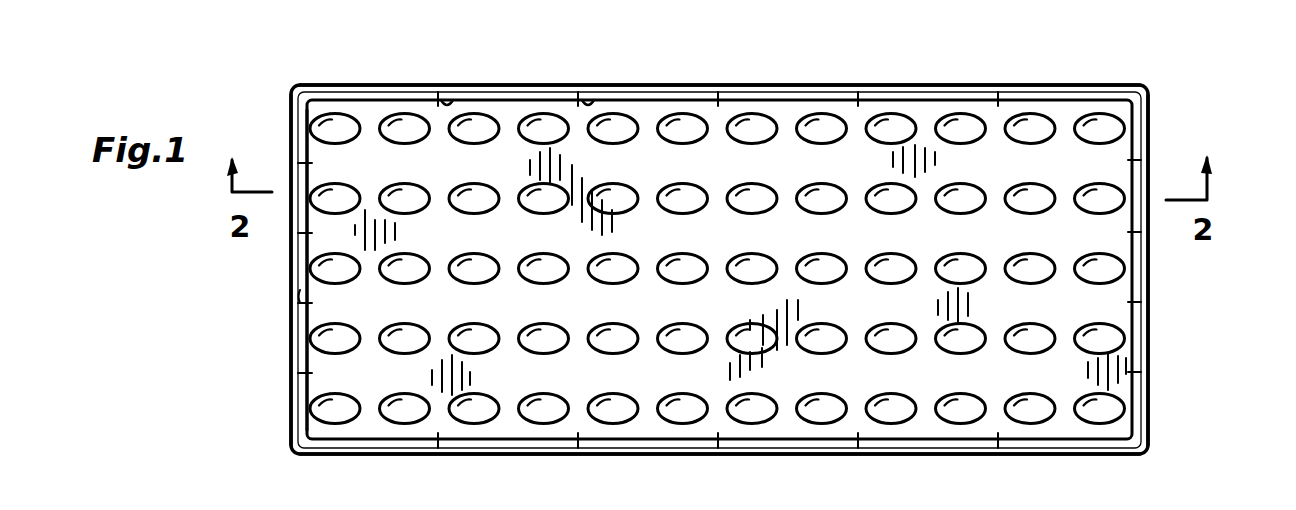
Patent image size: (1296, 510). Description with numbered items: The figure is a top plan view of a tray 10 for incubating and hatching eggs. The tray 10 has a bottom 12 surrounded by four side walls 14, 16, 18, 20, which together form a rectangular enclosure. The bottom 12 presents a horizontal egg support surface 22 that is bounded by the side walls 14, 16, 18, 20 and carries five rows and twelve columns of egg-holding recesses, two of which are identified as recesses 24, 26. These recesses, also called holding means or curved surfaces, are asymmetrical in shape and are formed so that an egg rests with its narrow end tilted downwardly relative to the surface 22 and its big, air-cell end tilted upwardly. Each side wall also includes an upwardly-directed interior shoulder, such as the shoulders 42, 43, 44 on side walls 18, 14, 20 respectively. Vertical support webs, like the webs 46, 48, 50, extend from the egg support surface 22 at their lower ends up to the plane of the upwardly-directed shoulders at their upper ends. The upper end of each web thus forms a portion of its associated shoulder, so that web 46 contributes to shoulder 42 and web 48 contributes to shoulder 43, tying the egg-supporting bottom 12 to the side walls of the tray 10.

The tray 10 is at (1162, 85).
The bottom 12 is at (1065, 160).
The side wall 14 is at (698, 86).
The side wall 16 is at (631, 452).
The side wall 18 is at (291, 172).
The side wall 20 is at (1147, 405).
The horizontal egg support surface 22 is at (829, 318).
The egg-holding recess 24 is at (333, 200).
The egg-holding recess 26 is at (397, 200).
The upwardly-directed interior shoulder 42 is at (298, 298).
The upwardly-directed interior shoulder 43 is at (858, 99).
The upwardly-directed interior shoulder 44 is at (1138, 277).
The vertical support web 46 is at (307, 178).
The vertical support web 48 is at (450, 98).
The vertical support web 50 is at (590, 99).